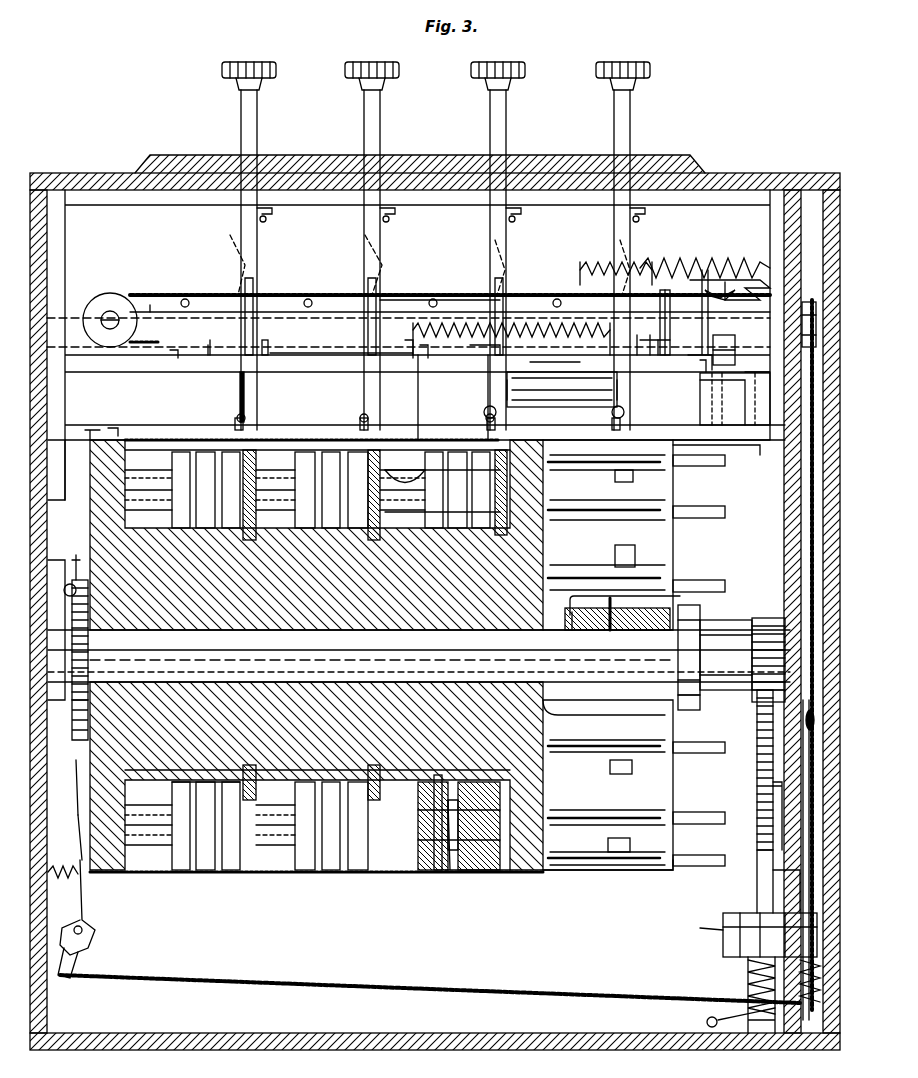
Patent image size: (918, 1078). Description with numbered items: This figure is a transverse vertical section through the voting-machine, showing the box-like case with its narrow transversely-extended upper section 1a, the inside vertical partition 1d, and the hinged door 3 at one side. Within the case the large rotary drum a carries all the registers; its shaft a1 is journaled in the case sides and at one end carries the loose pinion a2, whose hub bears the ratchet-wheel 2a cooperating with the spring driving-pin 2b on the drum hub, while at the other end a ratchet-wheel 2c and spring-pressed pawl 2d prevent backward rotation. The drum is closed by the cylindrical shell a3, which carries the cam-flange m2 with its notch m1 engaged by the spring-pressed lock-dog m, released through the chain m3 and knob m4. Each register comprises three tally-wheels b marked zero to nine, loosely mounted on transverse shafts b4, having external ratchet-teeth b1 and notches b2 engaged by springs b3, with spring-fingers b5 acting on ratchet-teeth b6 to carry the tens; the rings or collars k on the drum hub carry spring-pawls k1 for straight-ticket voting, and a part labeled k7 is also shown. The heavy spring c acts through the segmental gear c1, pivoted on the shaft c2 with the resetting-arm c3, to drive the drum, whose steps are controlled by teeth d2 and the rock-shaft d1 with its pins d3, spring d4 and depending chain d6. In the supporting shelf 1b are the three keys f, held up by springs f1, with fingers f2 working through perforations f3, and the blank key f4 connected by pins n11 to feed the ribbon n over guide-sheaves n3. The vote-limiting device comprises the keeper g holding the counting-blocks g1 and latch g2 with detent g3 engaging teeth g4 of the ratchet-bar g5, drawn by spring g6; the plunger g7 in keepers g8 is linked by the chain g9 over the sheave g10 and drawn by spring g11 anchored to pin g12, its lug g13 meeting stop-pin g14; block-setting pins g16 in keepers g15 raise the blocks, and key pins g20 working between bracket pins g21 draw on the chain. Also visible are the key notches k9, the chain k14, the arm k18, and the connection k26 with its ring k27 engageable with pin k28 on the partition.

The transversely-extended case-section 1a is at (88, 172).
The supporting bracket or shelf 1b is at (275, 300).
The inside vertical partition 1d is at (794, 210).
The voting key f is at (260, 132).
The key spring f1 is at (383, 219).
The depending finger f2 is at (387, 358).
The perforation f3 is at (256, 450).
The blank key f4 is at (634, 132).
The keeper g is at (745, 350).
The counting-block g1 is at (730, 372).
The escapement-lock g2 is at (700, 318).
The detent g3 is at (720, 268).
The ratchet-bar teeth g4 is at (722, 290).
The ratchet-bar g5 is at (578, 280).
The coiled spring g6 is at (705, 268).
The plunger or slide g7 is at (320, 353).
The plunger keeper g8 is at (210, 350).
The chain g9 is at (408, 300).
The guide-sheave g10 is at (112, 306).
The plunger spring g11 is at (440, 430).
The pin g12 is at (595, 340).
The lug g13 is at (250, 400).
The stop-pin g14 is at (270, 352).
The pin keeper g15 is at (570, 512).
The block-setting pin g16 is at (700, 465).
The key pin or lug g20 is at (418, 254).
The bracket pin g21 is at (186, 297).
The ring or collar k is at (252, 540).
The spring-pawl k1 is at (250, 798).
The carriage plate k7 is at (750, 475).
The lower notch k9 is at (713, 362).
The lock-slide chain k14 is at (752, 380).
The rock-shaft arm k18 is at (810, 302).
The flexible connection k26 is at (810, 527).
The ring k27 is at (798, 722).
The pin k28 is at (808, 786).
The paper ribbon n is at (560, 385).
The guide-sheave n3 is at (530, 362).
The pins n11 is at (655, 318).
The rock-shaft d1 is at (82, 440).
The drum ratchet-teeth d2 is at (109, 419).
The projecting pin or rod d3 is at (241, 414).
The spring d4 is at (82, 470).
The depending chain d6 is at (810, 548).
The tally-wheel b is at (225, 452).
The external ratchet-teeth b1 is at (372, 452).
The peripheral notch b2 is at (172, 515).
The wheel spring b3 is at (172, 792).
The transverse shaft b4 is at (403, 470).
The spring-finger b5 is at (437, 870).
The ratchet-teeth b6 is at (470, 870).
The rotary drum a is at (530, 795).
The drum shaft a1 is at (498, 638).
The loose pinion a2 is at (762, 620).
The cylindrical peripheral shell a3 is at (586, 882).
The ratchet-wheel 2a is at (690, 710).
The spring driving-pin 2b is at (660, 600).
The ratchet-wheel 2c is at (80, 740).
The spring-pressed pawl 2d is at (78, 555).
The drum spring c is at (746, 970).
The segmental gear c1 is at (762, 850).
The shaft c2 is at (739, 935).
The resetting-arm c3 is at (818, 850).
The hinged door 3 is at (830, 888).
The lock-dog m is at (92, 905).
The notch m1 is at (80, 850).
The cam-flange m2 is at (80, 806).
The release chain m3 is at (455, 985).
The knob or finger-piece m4 is at (708, 1020).